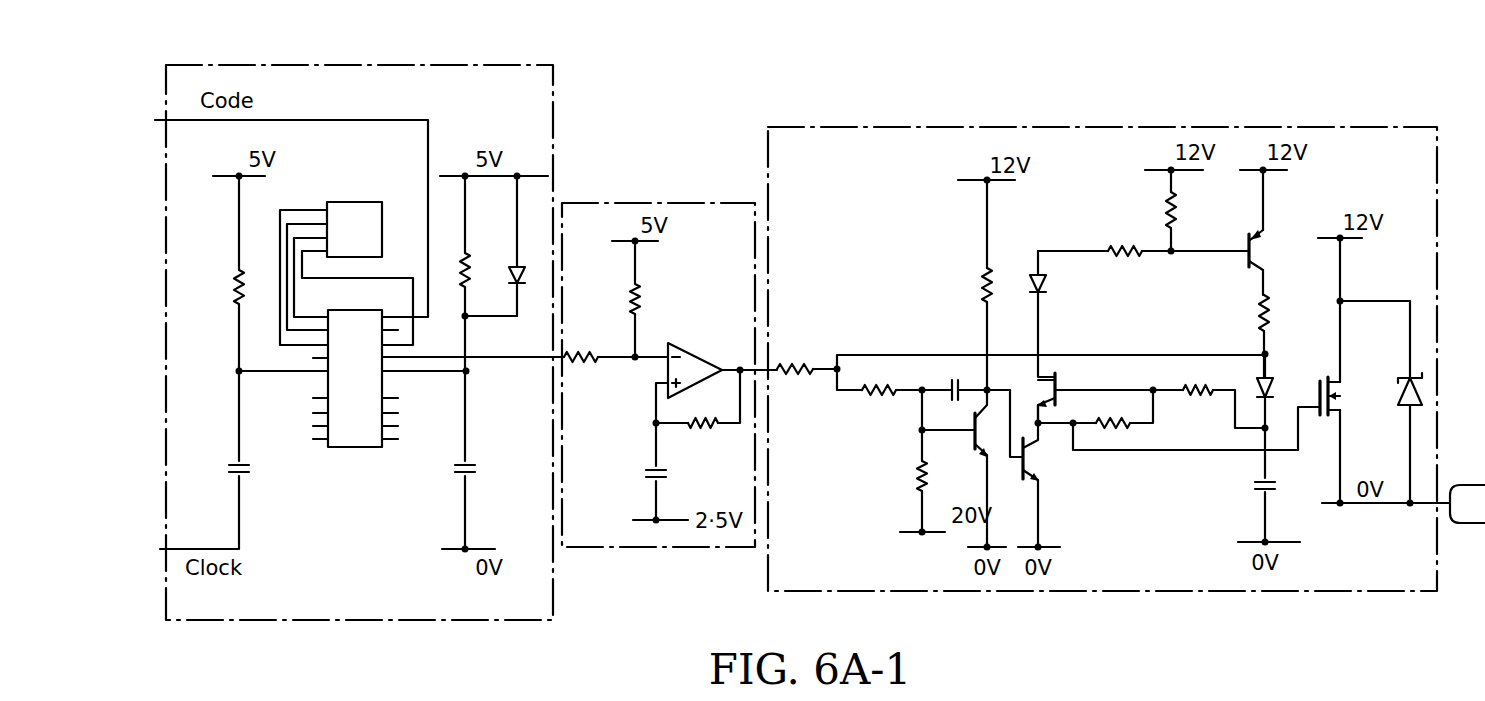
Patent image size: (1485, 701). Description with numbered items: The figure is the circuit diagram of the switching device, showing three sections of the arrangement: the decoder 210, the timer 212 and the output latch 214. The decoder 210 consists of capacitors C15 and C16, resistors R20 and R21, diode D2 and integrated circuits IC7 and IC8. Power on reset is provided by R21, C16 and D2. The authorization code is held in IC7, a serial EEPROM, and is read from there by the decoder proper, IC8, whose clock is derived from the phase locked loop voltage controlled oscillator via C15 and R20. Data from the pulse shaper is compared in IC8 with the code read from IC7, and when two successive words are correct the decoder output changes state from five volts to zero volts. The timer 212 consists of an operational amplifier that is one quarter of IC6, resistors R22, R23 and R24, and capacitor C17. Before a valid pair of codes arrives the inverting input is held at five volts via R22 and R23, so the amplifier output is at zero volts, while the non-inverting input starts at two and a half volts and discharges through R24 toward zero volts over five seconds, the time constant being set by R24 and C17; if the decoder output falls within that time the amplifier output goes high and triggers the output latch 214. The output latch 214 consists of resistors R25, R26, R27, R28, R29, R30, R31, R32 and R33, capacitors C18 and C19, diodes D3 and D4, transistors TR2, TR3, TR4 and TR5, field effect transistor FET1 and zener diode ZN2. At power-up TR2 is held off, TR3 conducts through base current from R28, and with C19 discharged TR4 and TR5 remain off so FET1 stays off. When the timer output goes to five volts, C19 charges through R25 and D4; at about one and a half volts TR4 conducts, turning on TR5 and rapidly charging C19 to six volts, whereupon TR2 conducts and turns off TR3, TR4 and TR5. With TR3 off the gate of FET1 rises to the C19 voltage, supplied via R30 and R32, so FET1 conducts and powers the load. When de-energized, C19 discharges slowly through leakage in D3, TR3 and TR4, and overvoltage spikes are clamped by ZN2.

The decoder 210 is at (282, 621).
The timer 212 is at (691, 548).
The output latch 214 is at (1227, 592).
The resistor R20 is at (218, 273).
The serial EEPROM integrated circuit IC7 is at (356, 201).
The decoder integrated circuit IC8 is at (361, 450).
The capacitor C15 is at (263, 471).
The resistor R21 is at (470, 263).
The diode D2 is at (509, 269).
The capacitor C16 is at (488, 471).
The resistor R22 is at (585, 345).
The resistor R23 is at (658, 299).
The operational amplifier integrated circuit IC6 is at (701, 345).
The resistor R24 is at (704, 437).
The capacitor C17 is at (633, 474).
The resistor R25 is at (797, 356).
The resistor R26 is at (878, 405).
The capacitor C18 is at (951, 377).
The resistor R27 is at (899, 476).
The transistor TR2 is at (972, 437).
The transistor TR3 is at (1021, 472).
The resistor R28 is at (966, 285).
The diode D3 is at (1055, 273).
The transistor TR4 is at (1063, 377).
The resistor R29 is at (1125, 265).
The resistor R30 is at (1110, 427).
The resistor R31 is at (1149, 210).
The transistor TR5 is at (1248, 237).
The resistor R33 is at (1242, 313).
The resistor R32 is at (1195, 406).
The diode D4 is at (1258, 378).
The field effect transistor FET1 is at (1318, 395).
The capacitor C19 is at (1243, 488).
The zener diode ZN2 is at (1397, 397).